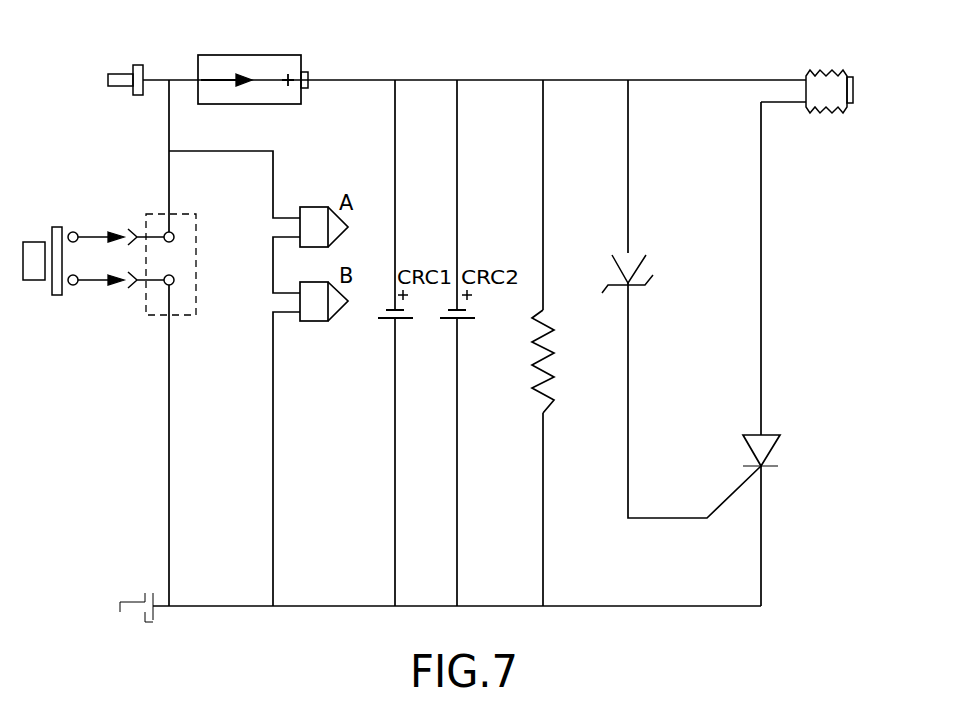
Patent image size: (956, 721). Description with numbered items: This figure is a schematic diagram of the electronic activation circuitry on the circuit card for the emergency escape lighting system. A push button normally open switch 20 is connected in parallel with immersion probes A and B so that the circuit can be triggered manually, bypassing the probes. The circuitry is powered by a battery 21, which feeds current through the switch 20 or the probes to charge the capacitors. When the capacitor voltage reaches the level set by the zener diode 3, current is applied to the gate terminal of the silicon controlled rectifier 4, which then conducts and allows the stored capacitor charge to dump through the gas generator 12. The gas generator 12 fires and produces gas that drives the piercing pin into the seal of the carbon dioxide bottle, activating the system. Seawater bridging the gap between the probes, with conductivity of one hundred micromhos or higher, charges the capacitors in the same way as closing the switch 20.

The switch 20 is at (65, 228).
The battery / charging unit 21 is at (232, 53).
The trigger diode 3 is at (637, 252).
The SCR 4 is at (777, 433).
The lamp 12 is at (835, 72).